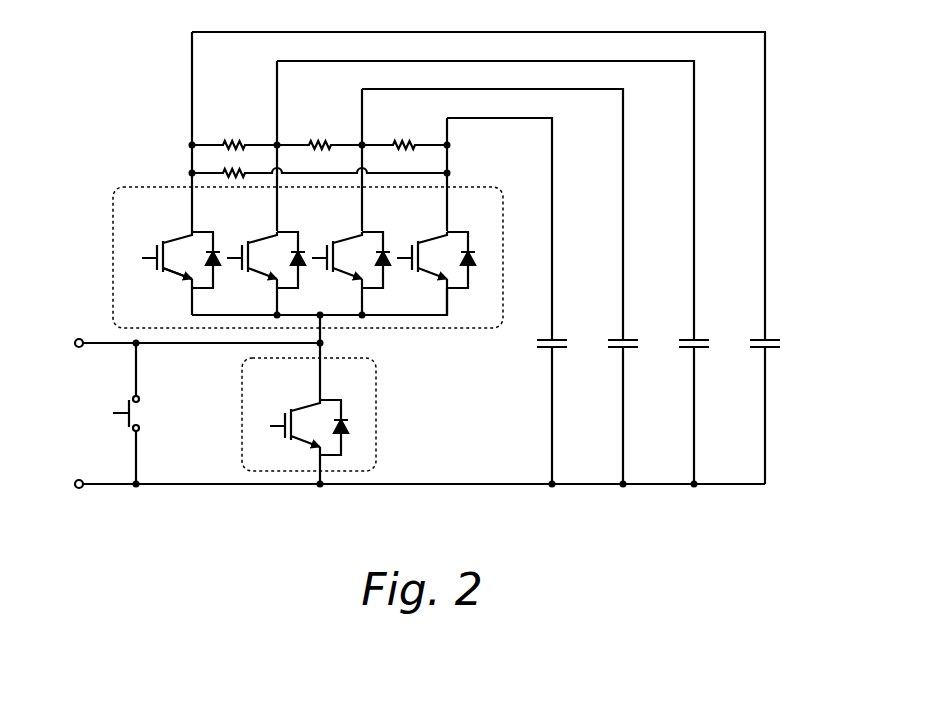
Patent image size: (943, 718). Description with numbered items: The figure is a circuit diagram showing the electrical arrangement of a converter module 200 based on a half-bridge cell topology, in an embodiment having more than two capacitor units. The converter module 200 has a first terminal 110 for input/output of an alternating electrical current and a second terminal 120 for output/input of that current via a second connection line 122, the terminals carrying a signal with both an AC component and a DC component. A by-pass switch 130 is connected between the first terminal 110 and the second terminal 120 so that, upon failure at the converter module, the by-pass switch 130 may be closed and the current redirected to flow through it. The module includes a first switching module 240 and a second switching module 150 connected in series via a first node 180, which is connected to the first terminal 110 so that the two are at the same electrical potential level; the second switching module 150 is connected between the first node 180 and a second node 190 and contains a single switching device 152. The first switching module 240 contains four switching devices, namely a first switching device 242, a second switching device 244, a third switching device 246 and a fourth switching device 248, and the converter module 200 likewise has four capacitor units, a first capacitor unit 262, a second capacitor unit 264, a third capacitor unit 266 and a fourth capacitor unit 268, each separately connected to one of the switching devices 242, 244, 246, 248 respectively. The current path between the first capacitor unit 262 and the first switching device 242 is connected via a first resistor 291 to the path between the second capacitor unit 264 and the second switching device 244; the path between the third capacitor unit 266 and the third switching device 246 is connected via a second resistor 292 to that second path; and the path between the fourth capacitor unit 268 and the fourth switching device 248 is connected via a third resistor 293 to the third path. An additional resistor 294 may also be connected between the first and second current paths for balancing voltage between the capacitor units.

The converter module 200 is at (92, 82).
The first terminal 110 is at (136, 345).
The second terminal 120 is at (136, 486).
The second connection line 122 is at (161, 345).
The by-pass switch 130 is at (116, 429).
The second switching module 150 is at (377, 425).
The switching device 152 is at (305, 402).
The first node 180 is at (323, 343).
The second node 190 is at (322, 486).
The first switching module 240 is at (112, 229).
The first switching device 242 is at (176, 231).
The second switching device 244 is at (261, 231).
The third switching device 246 is at (346, 231).
The fourth switching device 248 is at (431, 231).
The first capacitor unit 262 is at (773, 338).
The second capacitor unit 264 is at (702, 338).
The third capacitor unit 266 is at (631, 338).
The fourth capacitor unit 268 is at (560, 338).
The first resistor 291 is at (232, 139).
The second resistor 292 is at (316, 139).
The third resistor 293 is at (402, 139).
The additional resistor 294 is at (228, 171).